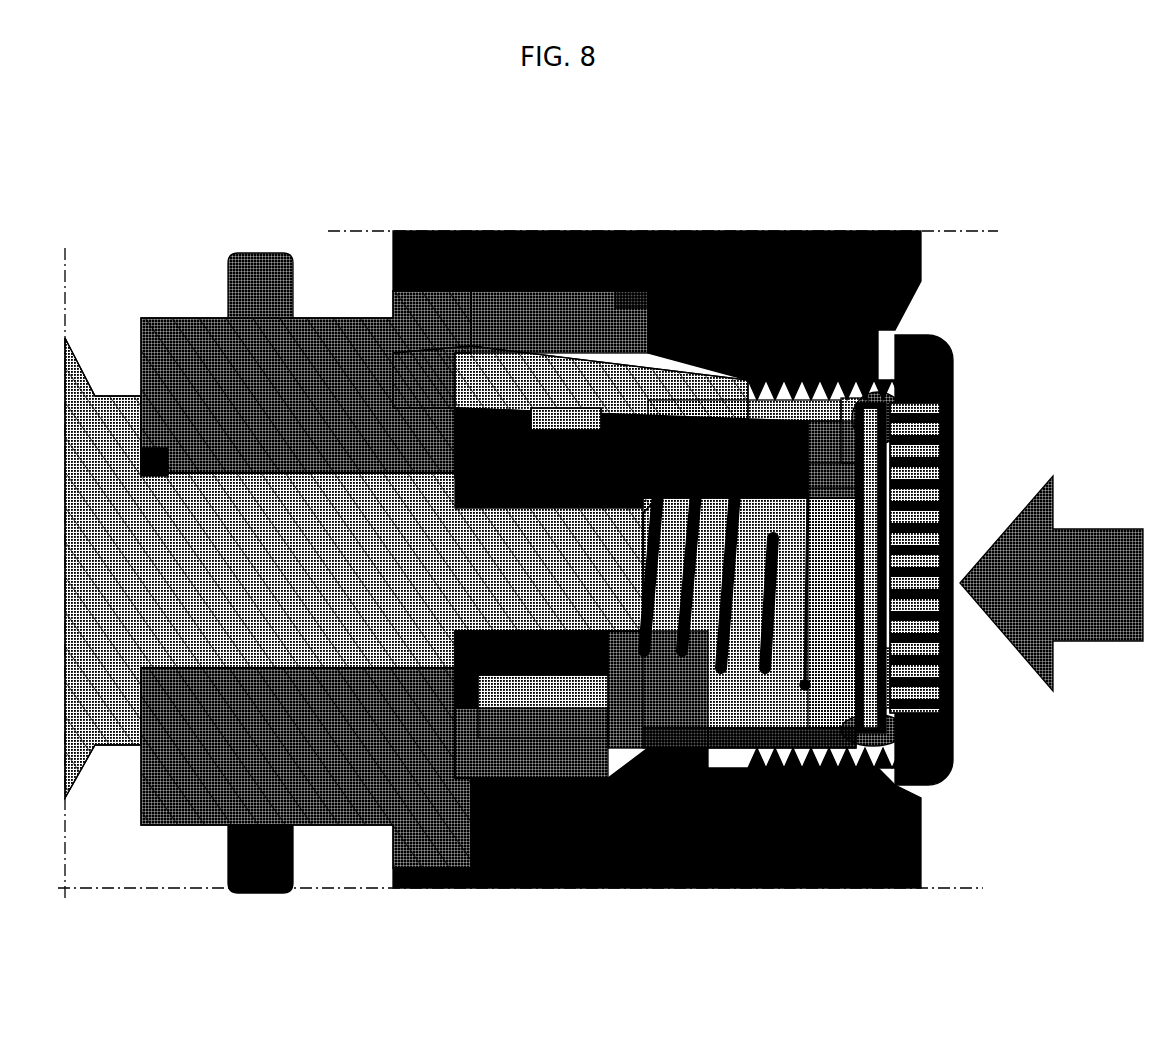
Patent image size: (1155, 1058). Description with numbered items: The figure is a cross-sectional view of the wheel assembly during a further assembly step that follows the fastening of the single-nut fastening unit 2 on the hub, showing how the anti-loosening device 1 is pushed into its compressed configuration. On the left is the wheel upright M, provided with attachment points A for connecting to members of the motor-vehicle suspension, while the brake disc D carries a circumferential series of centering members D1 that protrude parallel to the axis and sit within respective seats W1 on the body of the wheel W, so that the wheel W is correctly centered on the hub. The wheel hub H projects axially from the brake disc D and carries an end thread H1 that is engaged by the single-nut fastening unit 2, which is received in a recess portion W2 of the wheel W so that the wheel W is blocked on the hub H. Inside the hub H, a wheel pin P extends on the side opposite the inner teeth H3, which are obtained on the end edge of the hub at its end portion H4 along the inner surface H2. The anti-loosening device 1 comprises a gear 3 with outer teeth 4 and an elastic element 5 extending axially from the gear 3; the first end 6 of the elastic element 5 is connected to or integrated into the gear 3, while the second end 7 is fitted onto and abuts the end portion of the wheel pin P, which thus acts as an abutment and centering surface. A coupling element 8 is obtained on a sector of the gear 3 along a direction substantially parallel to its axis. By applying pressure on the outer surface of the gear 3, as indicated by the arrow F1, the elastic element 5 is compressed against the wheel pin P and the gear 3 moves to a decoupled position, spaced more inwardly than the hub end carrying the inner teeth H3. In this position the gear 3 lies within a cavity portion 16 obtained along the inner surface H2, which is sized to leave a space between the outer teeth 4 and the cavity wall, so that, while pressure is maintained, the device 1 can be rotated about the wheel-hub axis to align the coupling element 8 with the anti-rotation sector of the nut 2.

The wheel upright M is at (160, 310).
The attachment points A is at (252, 242).
The wheel W is at (772, 220).
The seats W1 is at (655, 252).
The recess portion W2 is at (800, 292).
The brake disc D is at (470, 328).
The centering members D1 is at (447, 238).
The wheel hub H is at (688, 378).
The end thread H1 is at (842, 742).
The inner surface H2 is at (745, 413).
The inner teeth H3 is at (882, 690).
The end portion H4 is at (700, 762).
The wheel pin P is at (500, 612).
The anti-loosening device 1 is at (874, 530).
The single-nut fastening unit 2 is at (890, 352).
The gear 3 is at (879, 645).
The outer teeth 4 is at (880, 442).
The elastic element 5 is at (722, 625).
The first end 6 is at (838, 680).
The second end 7 is at (650, 492).
The coupling element 8 is at (870, 470).
The cavity portion 16 is at (880, 412).
The arrow F1 is at (1085, 524).